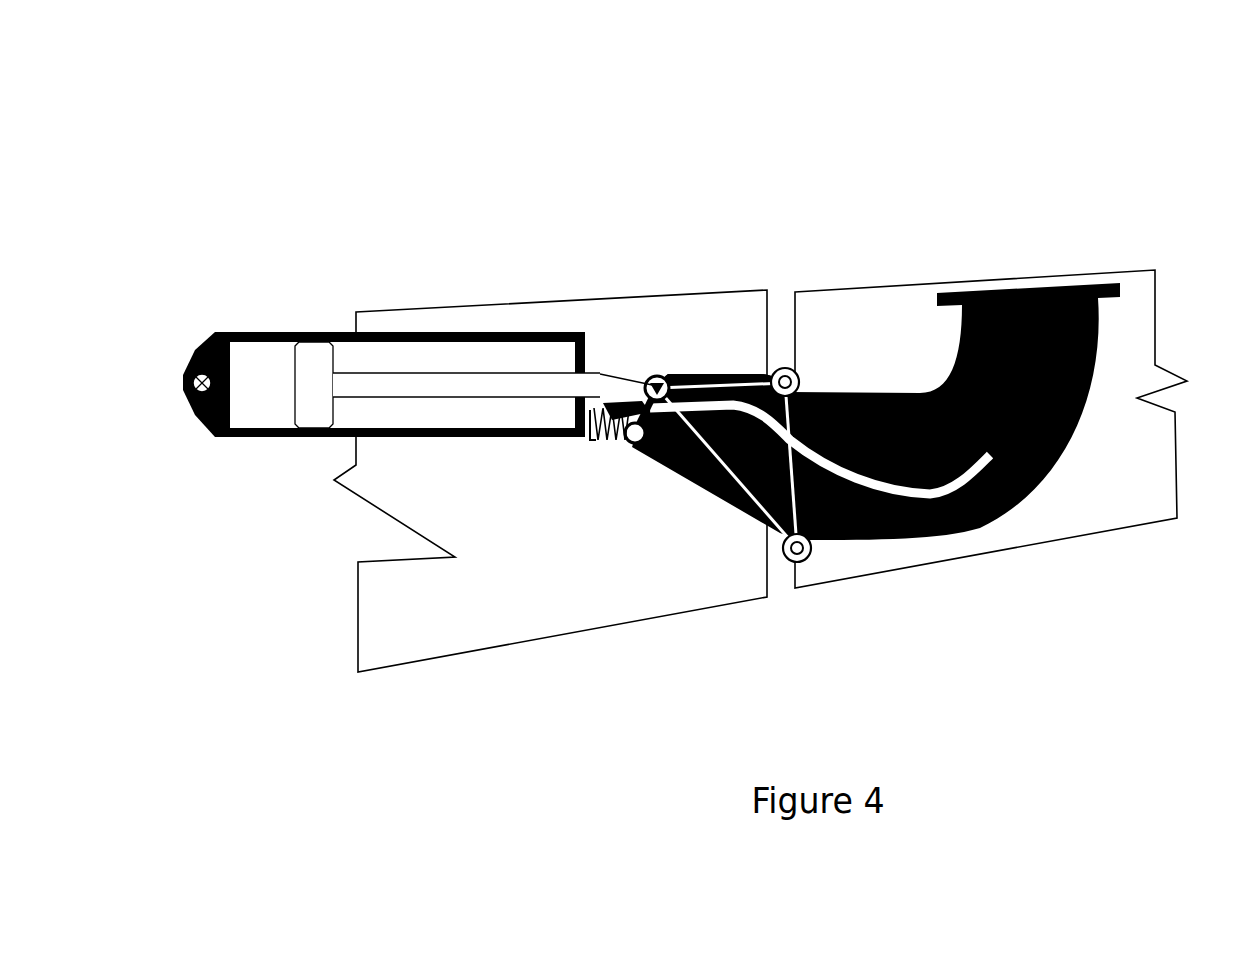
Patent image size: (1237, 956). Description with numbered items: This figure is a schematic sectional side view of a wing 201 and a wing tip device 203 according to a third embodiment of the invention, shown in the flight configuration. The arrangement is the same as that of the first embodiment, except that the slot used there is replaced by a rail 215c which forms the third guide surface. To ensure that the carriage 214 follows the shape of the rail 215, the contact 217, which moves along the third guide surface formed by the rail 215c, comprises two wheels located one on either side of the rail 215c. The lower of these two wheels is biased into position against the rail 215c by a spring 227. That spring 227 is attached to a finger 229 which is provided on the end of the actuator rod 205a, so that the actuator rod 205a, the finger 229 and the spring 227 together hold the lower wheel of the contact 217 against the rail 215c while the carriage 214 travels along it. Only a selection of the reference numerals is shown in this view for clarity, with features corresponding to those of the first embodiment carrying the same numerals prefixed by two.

The wing 201 is at (418, 308).
The wing tip device 203 is at (1137, 263).
The actuator rod 205a is at (520, 387).
The finger 229 is at (604, 415).
The rail 215c is at (747, 403).
The rail 215 is at (917, 545).
The carriage 214 is at (773, 532).
The contact 217 is at (632, 445).
The spring 227 is at (600, 442).